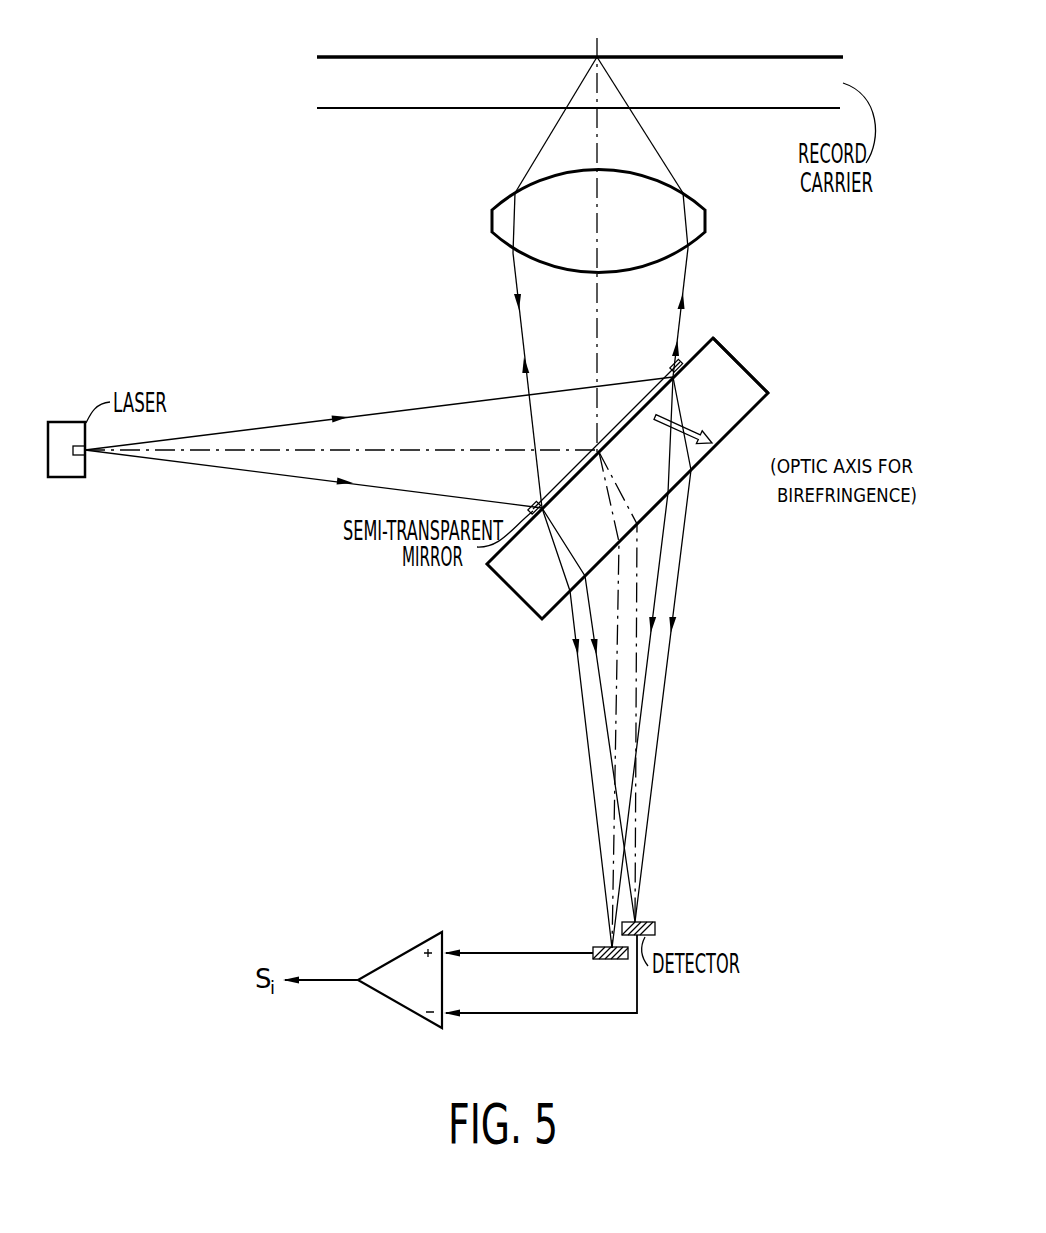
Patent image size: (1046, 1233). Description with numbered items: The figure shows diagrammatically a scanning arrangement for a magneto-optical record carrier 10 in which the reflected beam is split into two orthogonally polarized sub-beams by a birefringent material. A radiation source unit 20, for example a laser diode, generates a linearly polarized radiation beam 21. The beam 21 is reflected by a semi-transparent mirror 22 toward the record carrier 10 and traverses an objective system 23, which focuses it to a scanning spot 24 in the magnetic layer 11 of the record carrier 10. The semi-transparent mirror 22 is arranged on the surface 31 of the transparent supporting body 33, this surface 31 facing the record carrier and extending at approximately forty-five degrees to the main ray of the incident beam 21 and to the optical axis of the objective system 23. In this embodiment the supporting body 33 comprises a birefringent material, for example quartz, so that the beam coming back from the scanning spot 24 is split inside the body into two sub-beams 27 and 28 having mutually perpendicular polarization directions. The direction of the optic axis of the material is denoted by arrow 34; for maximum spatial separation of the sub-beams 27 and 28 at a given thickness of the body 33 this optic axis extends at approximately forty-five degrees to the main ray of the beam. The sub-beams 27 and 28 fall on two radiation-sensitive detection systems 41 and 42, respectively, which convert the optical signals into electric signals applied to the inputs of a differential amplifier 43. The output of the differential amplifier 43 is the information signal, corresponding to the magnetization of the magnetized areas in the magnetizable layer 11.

The record carrier 10 is at (746, 97).
The magnetic layer 11 is at (727, 56).
The radiation source unit 20 is at (80, 478).
The radiation beam 21 is at (203, 457).
The semi-transparent mirror 22 is at (543, 491).
The objective system 23 is at (678, 238).
The scanning spot 24 is at (598, 56).
The sub-beam 27 is at (656, 702).
The sub-beam 28 is at (605, 763).
The surface 31 is at (696, 352).
The transparent supporting body 33 is at (753, 374).
The arrow 34 is at (699, 442).
The radiation-sensitive detection system 41 is at (657, 927).
The radiation-sensitive detection system 42 is at (602, 947).
The differential amplifier 43 is at (398, 998).